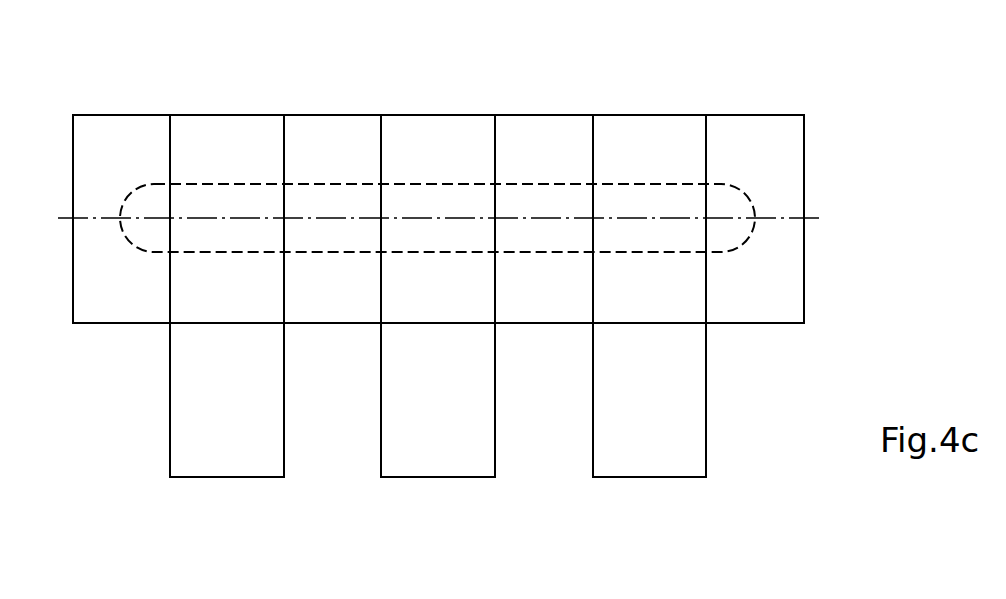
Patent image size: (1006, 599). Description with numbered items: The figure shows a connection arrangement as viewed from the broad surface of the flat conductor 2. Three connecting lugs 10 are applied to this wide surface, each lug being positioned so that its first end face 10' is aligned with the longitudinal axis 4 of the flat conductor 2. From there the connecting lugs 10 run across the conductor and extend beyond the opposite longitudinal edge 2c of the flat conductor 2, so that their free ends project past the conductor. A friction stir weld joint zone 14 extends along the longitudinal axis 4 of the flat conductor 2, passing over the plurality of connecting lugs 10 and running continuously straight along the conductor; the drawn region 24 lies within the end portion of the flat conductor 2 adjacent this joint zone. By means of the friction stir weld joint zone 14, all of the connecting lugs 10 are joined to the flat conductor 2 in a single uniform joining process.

The flat conductor 2 is at (805, 250).
The longitudinal edge 2c is at (745, 113).
The longitudinal axis 4 is at (105, 219).
The connecting lug 10 is at (438, 438).
The first end face 10' is at (438, 182).
The friction stir weld joint zone 14 is at (158, 236).
The end portion 24 is at (780, 282).